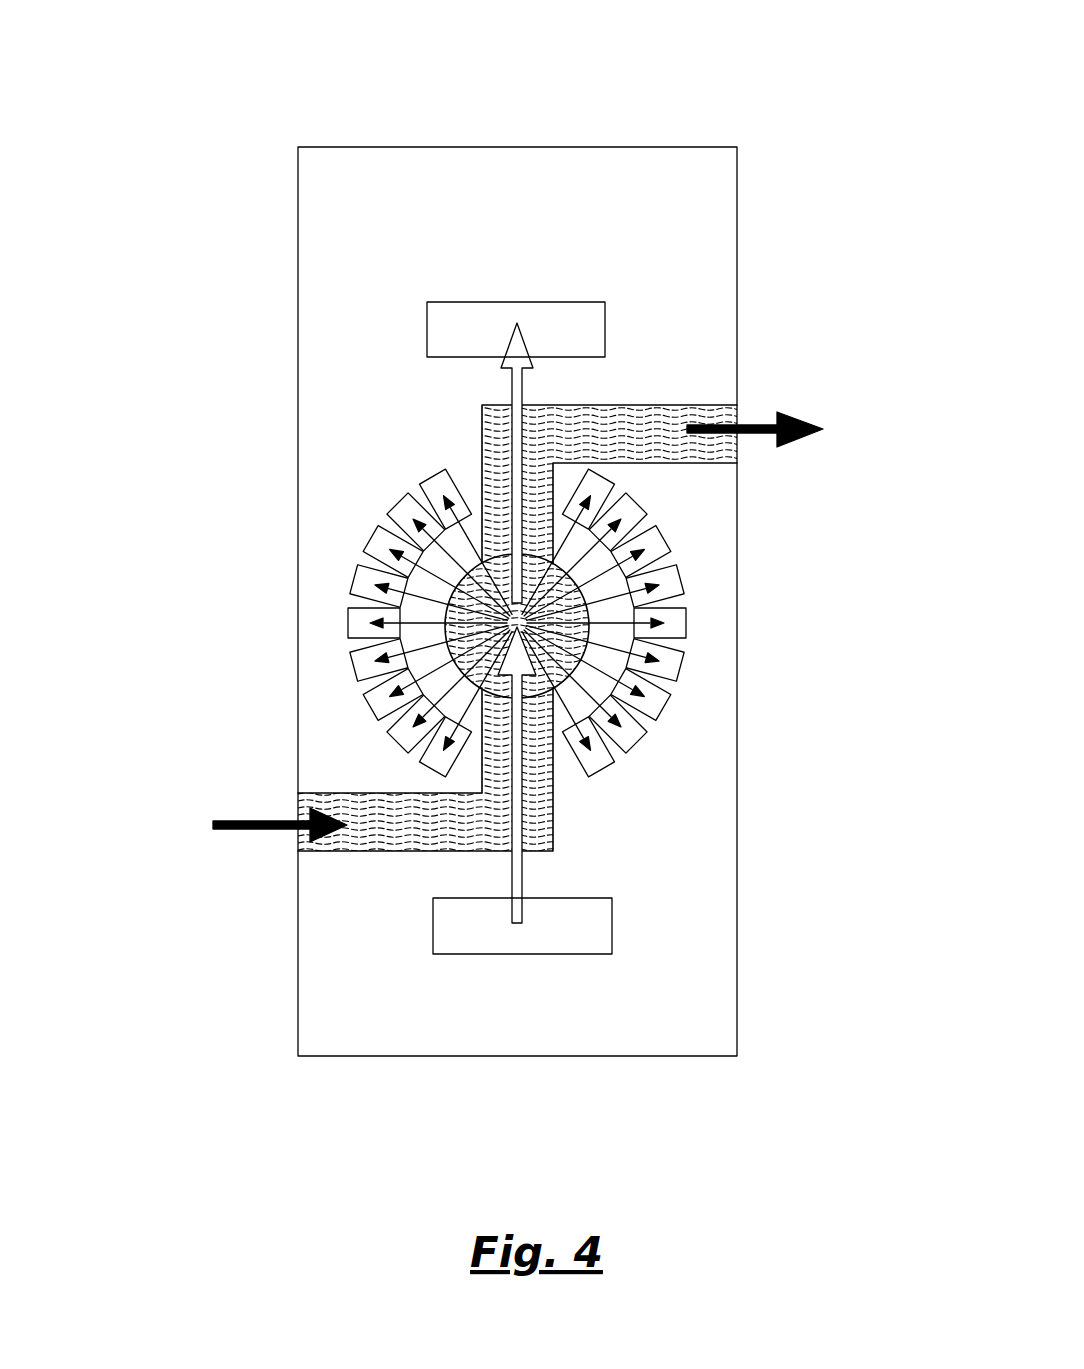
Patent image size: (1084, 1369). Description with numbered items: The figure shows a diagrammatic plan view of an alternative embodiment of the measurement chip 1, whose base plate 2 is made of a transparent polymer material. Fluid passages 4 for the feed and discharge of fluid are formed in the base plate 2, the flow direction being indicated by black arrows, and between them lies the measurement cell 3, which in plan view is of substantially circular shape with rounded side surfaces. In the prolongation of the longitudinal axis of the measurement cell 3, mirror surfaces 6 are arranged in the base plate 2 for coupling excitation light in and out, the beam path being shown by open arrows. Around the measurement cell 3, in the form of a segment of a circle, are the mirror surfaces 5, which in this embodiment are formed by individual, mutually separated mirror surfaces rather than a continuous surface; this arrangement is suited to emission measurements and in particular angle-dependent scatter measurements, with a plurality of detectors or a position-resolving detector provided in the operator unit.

The measurement chip 1 is at (758, 84).
The base plate 2 is at (713, 277).
The measurement cell 3 is at (515, 618).
The fluid passages 4 is at (690, 417).
The mirror surfaces 5 is at (365, 682).
The mirror surfaces 6 is at (448, 322).